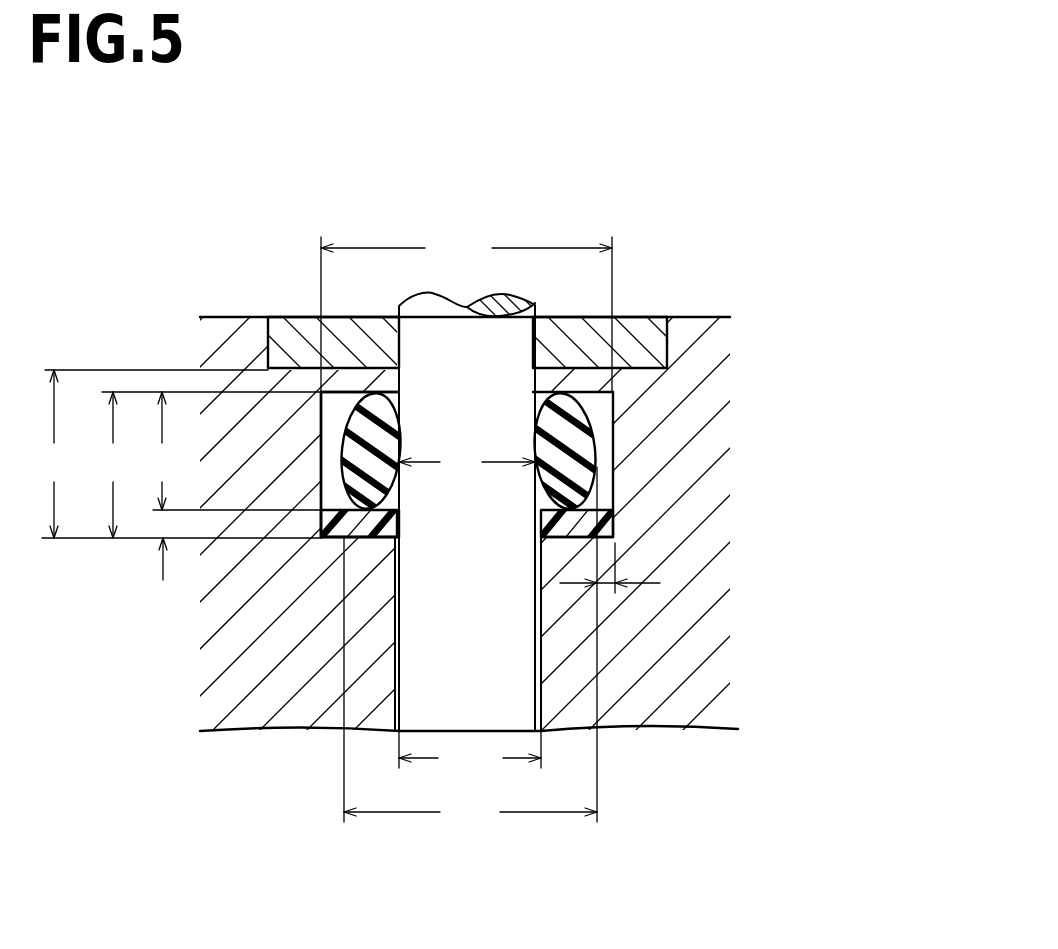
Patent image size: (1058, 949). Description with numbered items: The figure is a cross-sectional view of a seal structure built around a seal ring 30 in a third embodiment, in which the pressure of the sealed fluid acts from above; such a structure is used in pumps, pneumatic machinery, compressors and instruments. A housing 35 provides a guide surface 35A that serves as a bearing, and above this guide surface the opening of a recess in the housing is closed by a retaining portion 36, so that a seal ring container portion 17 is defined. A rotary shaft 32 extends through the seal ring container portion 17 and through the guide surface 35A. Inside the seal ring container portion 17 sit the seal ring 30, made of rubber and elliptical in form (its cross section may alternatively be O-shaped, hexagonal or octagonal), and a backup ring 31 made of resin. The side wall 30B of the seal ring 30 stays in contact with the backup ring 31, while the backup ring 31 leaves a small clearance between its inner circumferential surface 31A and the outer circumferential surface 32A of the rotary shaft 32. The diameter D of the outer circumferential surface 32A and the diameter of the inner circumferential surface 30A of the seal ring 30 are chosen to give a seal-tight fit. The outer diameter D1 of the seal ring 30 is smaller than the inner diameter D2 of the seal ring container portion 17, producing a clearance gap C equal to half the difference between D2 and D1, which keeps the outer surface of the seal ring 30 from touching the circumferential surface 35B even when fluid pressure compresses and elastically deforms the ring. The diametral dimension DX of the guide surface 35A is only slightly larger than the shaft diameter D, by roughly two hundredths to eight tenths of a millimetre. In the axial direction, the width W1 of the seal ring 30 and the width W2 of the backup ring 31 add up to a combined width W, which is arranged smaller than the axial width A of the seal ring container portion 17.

The seal ring container portion 17 is at (567, 383).
The seal ring 30 is at (618, 541).
The inner circumferential surface of the seal ring 30A is at (402, 446).
The side wall of the seal ring 30B is at (350, 537).
The backup ring 31 is at (570, 707).
The inner circumferential surface of the backup ring 31A is at (401, 520).
The rotary shaft 32 is at (513, 655).
The outer circumferential surface of the rotary shaft 32A is at (392, 405).
The housing 35 is at (529, 473).
The guide surface 35A is at (538, 675).
The circumferential surface of the seal ring container portion 35B is at (322, 442).
The retaining portion 36 is at (625, 326).
The width of the seal ring container portion A is at (182, 454).
The combined width W is at (208, 465).
The width of the seal ring W1 is at (229, 451).
The width of the backup ring W2 is at (158, 520).
The diameter of the outer circumferential surface of the rotary shaft D is at (467, 461).
The outer diameter of the seal ring D1 is at (470, 648).
The inner diameter of the seal ring container portion D2 is at (466, 311).
The diametral dimension of the guide surface DX is at (470, 754).
The clearance gap C is at (640, 583).